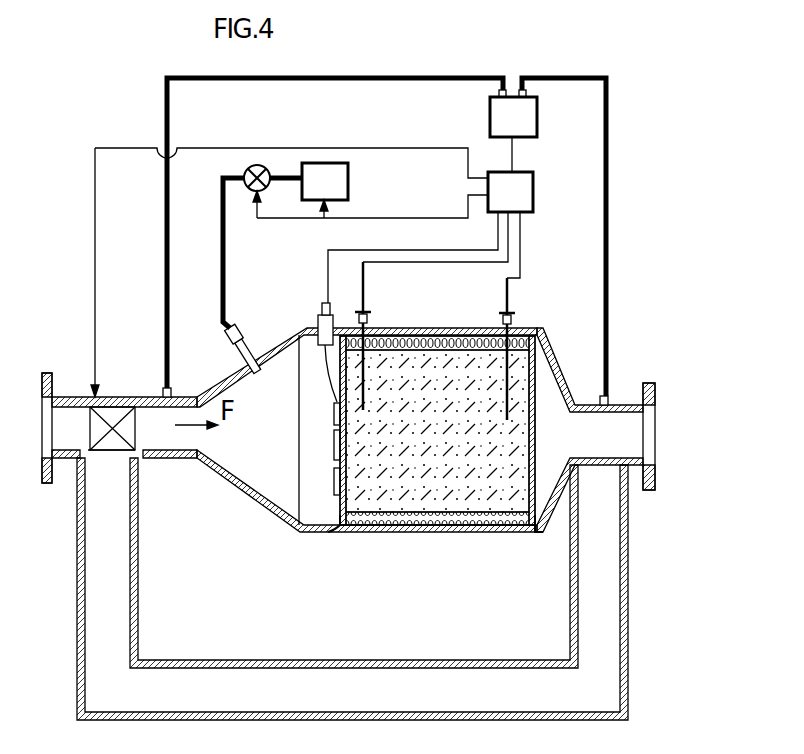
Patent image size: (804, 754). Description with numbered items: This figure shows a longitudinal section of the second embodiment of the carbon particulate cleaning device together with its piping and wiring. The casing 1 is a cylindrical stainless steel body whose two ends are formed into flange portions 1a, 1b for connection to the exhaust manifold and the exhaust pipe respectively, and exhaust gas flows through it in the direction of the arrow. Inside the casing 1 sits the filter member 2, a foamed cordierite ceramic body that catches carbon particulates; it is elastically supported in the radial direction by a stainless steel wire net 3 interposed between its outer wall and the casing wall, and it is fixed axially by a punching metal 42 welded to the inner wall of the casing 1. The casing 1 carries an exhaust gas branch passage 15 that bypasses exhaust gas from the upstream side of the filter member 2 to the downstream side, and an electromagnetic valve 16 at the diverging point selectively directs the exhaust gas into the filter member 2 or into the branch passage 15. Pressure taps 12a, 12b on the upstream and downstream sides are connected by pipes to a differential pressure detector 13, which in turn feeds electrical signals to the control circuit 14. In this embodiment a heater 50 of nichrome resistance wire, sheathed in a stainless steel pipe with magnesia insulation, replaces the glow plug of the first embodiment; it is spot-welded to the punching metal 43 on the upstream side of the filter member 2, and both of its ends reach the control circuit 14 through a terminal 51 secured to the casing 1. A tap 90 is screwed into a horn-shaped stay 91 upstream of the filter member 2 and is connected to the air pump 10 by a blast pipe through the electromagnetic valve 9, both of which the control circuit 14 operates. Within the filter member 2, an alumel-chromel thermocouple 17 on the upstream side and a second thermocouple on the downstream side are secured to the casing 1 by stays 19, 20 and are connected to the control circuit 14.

The casing 1 is at (437, 443).
The flange portion 1a is at (47, 486).
The flange portion 1b is at (648, 491).
The filter member 2 is at (387, 536).
The wire net 3 is at (423, 536).
The electromagnetic valve 9 is at (246, 172).
The air pump 10 is at (325, 181).
The pressure tap 12a is at (163, 391).
The pressure tap 12b is at (606, 396).
The differential pressure detector 13 is at (513, 113).
The control circuit 14 is at (510, 192).
The exhaust gas branch passage 15 is at (288, 685).
The electromagnetic valve 16 is at (111, 446).
The thermocouple 17 is at (394, 356).
The stay 19 is at (367, 318).
The stay 20 is at (503, 318).
The punching metal 42 is at (547, 530).
The punching metal 43 is at (321, 533).
The heater 50 is at (334, 428).
The terminal 51 is at (318, 318).
The tap 90 is at (226, 340).
The horn-shaped stay 91 is at (240, 367).